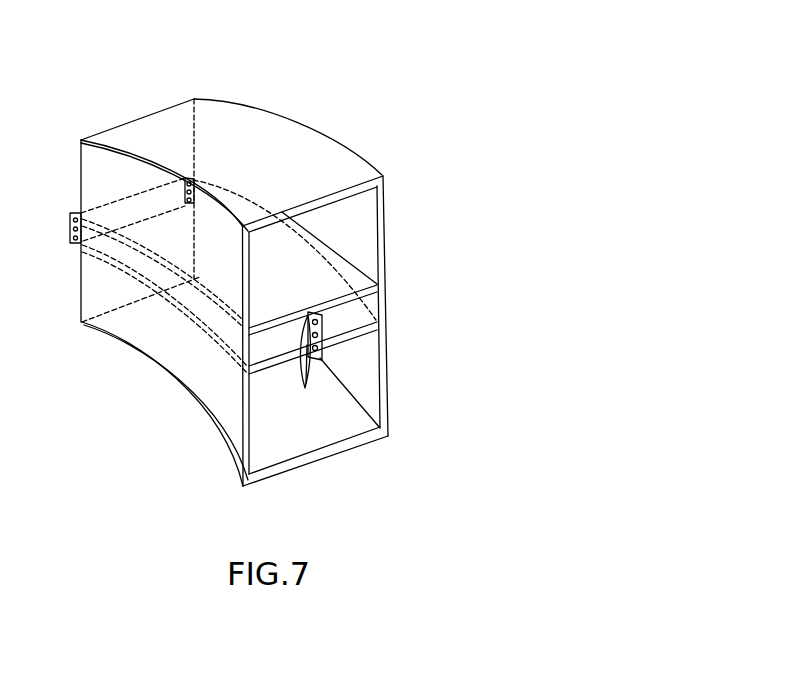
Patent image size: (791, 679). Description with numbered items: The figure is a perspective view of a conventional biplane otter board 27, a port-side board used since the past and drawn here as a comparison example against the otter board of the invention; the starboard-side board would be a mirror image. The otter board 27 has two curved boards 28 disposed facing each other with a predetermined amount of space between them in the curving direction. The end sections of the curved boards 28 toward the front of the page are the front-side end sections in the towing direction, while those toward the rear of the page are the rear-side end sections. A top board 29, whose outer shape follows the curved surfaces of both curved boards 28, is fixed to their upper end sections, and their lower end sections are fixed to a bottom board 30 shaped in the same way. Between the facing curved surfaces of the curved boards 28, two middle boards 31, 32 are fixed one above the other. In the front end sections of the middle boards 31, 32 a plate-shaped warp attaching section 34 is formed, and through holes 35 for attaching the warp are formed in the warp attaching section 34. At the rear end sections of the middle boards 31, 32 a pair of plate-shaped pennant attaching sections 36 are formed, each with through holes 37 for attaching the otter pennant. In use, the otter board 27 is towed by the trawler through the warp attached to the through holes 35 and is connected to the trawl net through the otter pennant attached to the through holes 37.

The biplane otter board 27 is at (98, 72).
The curved board 28 is at (383, 373).
The top board 29 is at (237, 130).
The bottom board 30 is at (298, 436).
The upper middle board 31 is at (330, 306).
The lower middle board 32 is at (335, 343).
The warp attaching section 34 is at (312, 312).
The through hole 35 is at (335, 370).
The pennant attaching section 36 is at (68, 222).
The through hole 37 is at (68, 232).